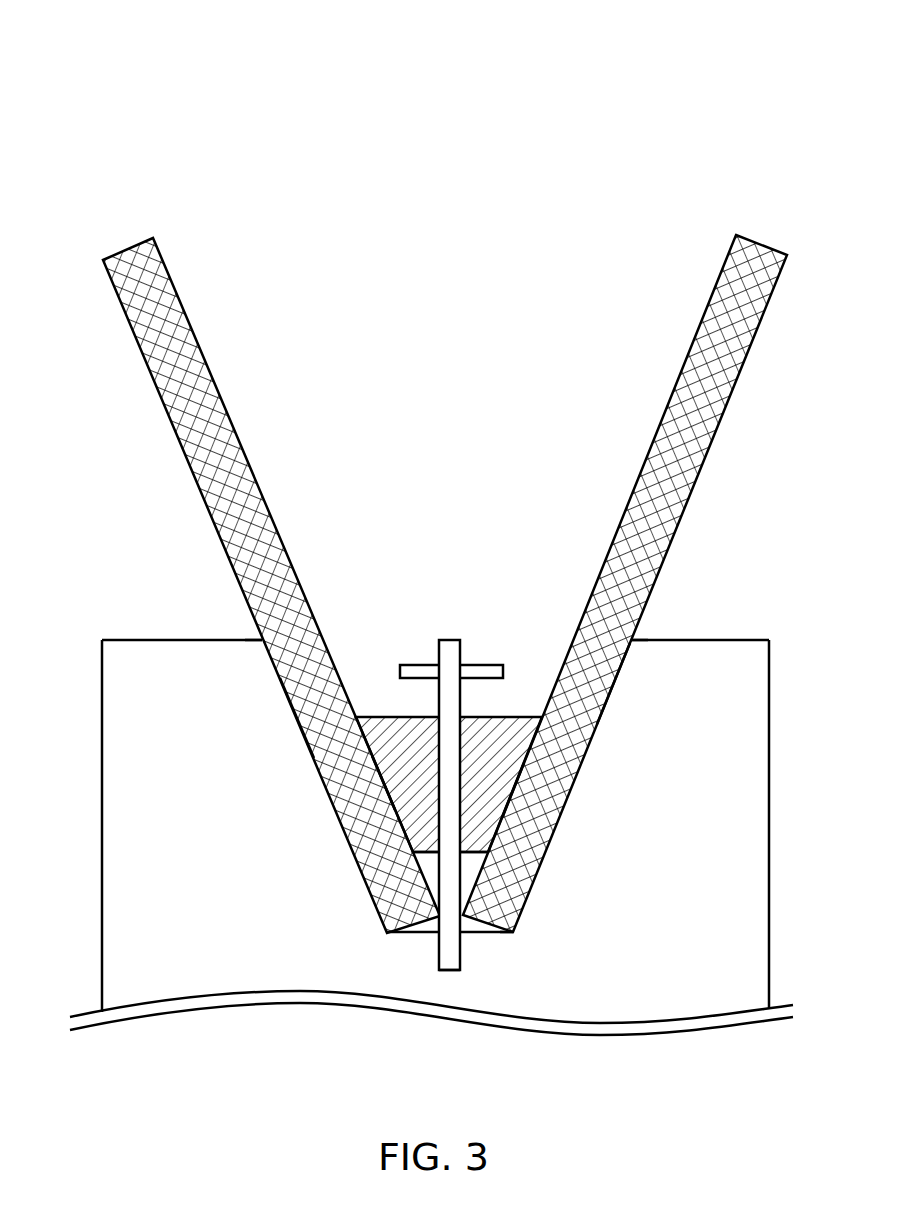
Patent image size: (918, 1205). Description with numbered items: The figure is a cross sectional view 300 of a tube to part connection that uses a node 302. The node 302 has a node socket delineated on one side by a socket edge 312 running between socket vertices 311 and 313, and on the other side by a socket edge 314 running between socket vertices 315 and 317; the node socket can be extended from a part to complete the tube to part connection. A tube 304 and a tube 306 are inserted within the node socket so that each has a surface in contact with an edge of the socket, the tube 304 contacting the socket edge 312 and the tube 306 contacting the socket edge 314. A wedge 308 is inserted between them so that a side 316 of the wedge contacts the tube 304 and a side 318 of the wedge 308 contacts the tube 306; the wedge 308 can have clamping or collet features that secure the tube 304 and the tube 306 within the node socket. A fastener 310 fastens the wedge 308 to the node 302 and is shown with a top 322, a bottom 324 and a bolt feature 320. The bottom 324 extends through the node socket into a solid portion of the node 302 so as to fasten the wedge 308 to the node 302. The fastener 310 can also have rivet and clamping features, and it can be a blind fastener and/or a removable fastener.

The cross sectional view 300 is at (131, 131).
The node 302 is at (177, 692).
The tube 304 is at (175, 353).
The tube 306 is at (725, 328).
The wedge 308 is at (398, 752).
The fastener 310 is at (448, 857).
The socket vertex 311 is at (262, 640).
The socket edge 312 is at (299, 727).
The socket vertex 313 is at (387, 932).
The socket edge 314 is at (613, 687).
The socket vertex 315 is at (513, 932).
The side of the wedge 316 is at (380, 777).
The socket vertex 317 is at (632, 640).
The side of the wedge 318 is at (518, 762).
The bolt feature 320 is at (483, 664).
The top 322 is at (450, 638).
The bottom 324 is at (445, 972).